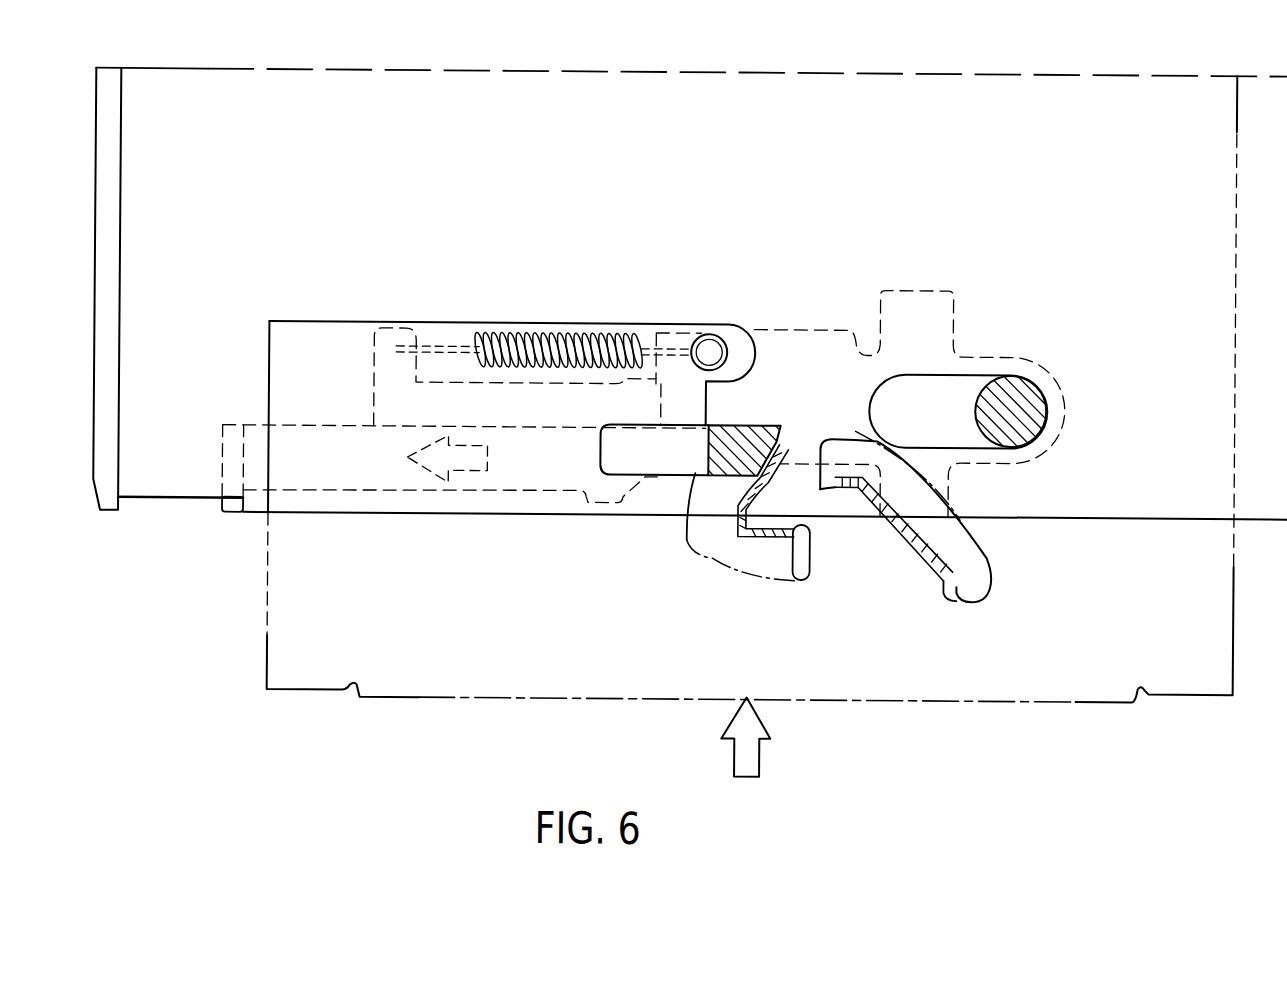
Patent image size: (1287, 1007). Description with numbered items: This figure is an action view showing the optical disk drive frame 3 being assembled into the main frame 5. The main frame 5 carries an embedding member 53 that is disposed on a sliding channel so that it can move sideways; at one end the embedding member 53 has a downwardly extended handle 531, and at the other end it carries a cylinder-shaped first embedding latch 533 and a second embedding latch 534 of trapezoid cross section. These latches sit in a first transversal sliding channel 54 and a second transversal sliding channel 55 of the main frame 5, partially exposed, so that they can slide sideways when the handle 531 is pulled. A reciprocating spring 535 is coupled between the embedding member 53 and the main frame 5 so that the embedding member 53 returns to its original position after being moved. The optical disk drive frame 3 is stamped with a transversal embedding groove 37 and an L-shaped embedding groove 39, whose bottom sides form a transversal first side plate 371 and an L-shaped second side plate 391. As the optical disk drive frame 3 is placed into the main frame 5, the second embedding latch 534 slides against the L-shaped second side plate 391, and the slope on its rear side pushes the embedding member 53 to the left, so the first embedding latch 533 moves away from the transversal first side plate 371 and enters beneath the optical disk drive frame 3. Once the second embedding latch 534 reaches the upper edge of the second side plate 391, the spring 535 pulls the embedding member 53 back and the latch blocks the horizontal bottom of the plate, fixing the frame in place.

The optical disk drive frame 3 is at (261, 649).
The main frame 5 is at (160, 481).
The transversal embedding groove 37 is at (1000, 560).
The L-shaped embedding groove 39 is at (707, 550).
The embedding member 53 is at (814, 316).
The first transversal sliding channel 54 is at (943, 388).
The second transversal sliding channel 55 is at (615, 450).
The transversal first side plate 371 is at (917, 540).
The L-shaped second side plate 391 is at (760, 533).
The handle 531 is at (223, 463).
The first embedding latch 533 is at (1018, 411).
The second embedding latch 534 is at (700, 434).
The reciprocating spring 535 is at (560, 319).